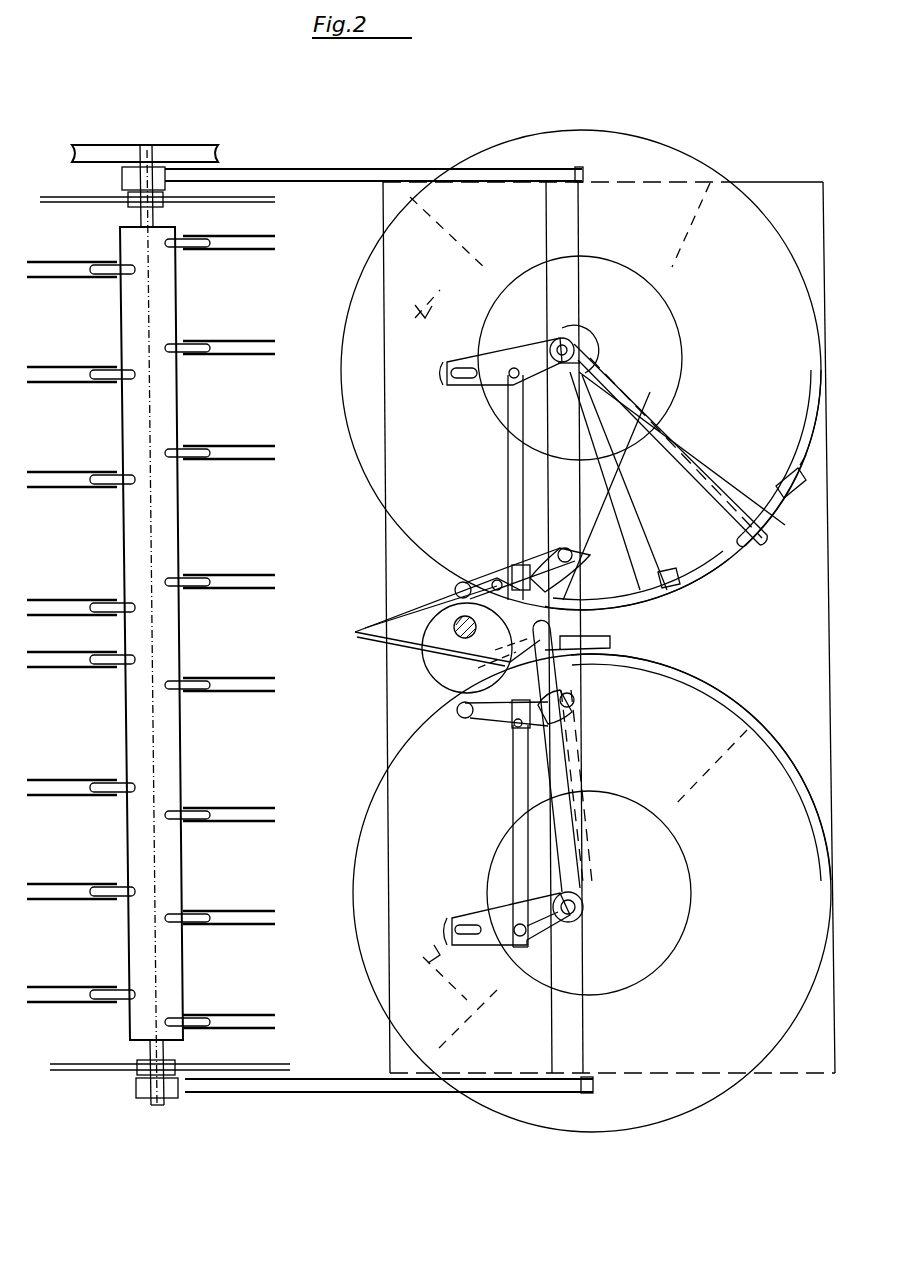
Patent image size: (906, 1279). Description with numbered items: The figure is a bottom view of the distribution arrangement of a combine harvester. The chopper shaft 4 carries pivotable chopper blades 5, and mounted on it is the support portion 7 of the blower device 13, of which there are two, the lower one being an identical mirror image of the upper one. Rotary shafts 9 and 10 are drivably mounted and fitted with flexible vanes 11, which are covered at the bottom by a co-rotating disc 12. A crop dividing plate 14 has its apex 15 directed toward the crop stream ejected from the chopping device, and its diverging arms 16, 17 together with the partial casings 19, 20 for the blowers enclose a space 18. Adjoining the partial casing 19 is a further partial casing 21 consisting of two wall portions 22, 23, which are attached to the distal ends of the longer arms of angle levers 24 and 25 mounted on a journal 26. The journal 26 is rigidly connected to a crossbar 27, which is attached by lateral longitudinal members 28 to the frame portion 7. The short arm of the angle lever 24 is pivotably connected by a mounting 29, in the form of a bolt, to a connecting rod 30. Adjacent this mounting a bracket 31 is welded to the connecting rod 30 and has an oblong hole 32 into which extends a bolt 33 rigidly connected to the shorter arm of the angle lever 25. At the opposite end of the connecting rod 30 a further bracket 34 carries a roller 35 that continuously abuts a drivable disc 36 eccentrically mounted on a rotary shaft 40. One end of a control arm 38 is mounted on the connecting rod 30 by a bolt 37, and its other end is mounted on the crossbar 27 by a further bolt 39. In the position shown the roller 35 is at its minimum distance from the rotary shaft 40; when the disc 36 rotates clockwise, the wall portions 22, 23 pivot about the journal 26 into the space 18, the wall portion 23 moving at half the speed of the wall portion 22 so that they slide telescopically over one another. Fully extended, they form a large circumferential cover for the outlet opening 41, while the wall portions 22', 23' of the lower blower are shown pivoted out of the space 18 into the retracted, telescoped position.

The shaft 4 is at (137, 709).
The chopper blades 5 is at (58, 797).
The support portion 7 is at (300, 170).
The rotary shaft 9 is at (600, 372).
The rotary shaft 10 is at (590, 896).
The flexible vanes 11 is at (722, 215).
The co-rotating disc 12 is at (765, 365).
The blower device 13 is at (476, 135).
The crop dividing plate 14 is at (382, 610).
The apex 15 is at (355, 640).
The diverging arm 16 is at (407, 612).
The diverging arm 17 is at (400, 655).
The space 18 is at (632, 540).
The partial casing 19 is at (628, 604).
The partial casing 20 is at (595, 660).
The further partial casing 21 is at (706, 574).
The wall portion 22 is at (779, 458).
The wall portion 22' is at (701, 764).
The wall portion 23 is at (676, 546).
The wall portion 23' is at (581, 690).
The angle lever 24 is at (672, 452).
The angle lever 25 is at (674, 485).
The journal 26 is at (575, 338).
The crossbar 27 is at (582, 1026).
The lateral longitudinal members 28 is at (345, 180).
The mounting 29 is at (513, 350).
The connecting rod 30 is at (510, 480).
The bracket 31 is at (485, 355).
The oblong hole 32 is at (465, 368).
The bolt 33 is at (460, 386).
The bracket 34 is at (497, 578).
The roller 35 is at (457, 586).
The drivable disc 36 is at (438, 680).
The bolt 37 is at (510, 560).
The control arm 38 is at (548, 550).
The bolt 39 is at (600, 520).
The rotary shaft 40 is at (455, 622).
The outlet opening 41 is at (803, 470).